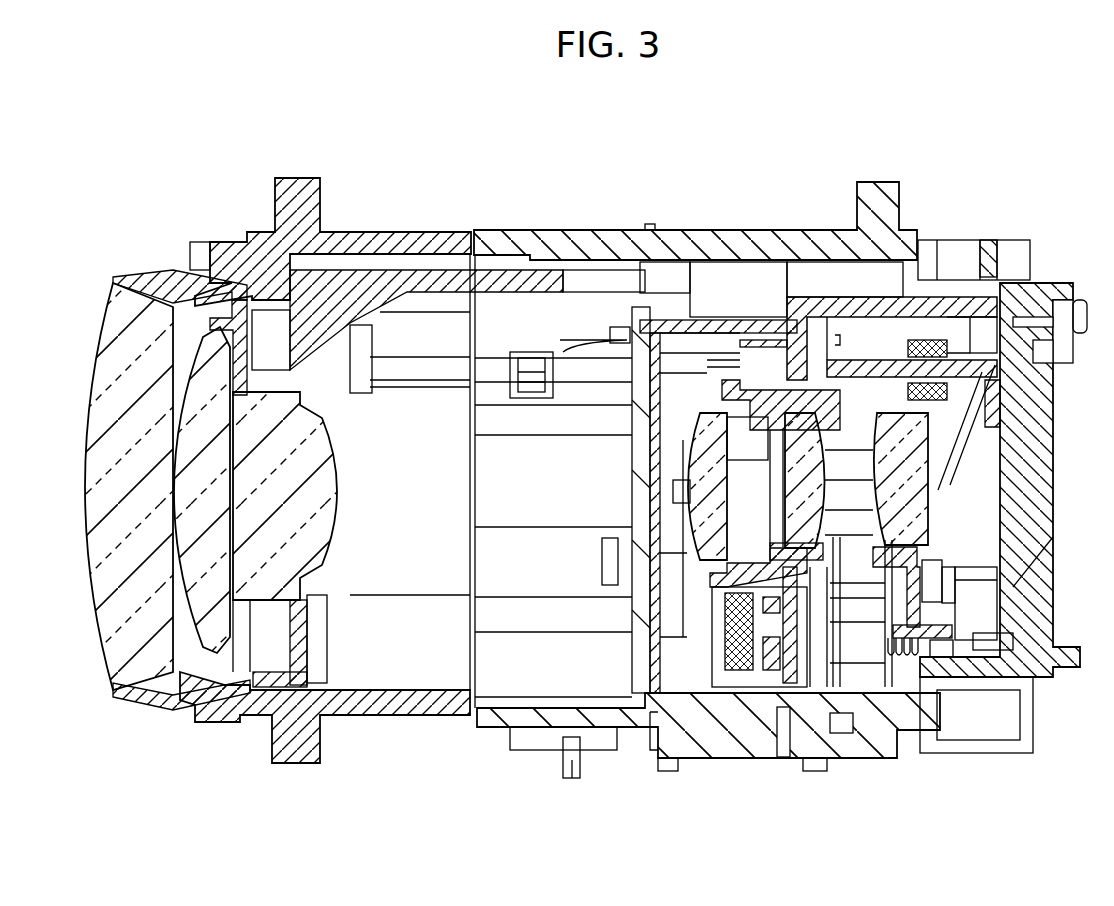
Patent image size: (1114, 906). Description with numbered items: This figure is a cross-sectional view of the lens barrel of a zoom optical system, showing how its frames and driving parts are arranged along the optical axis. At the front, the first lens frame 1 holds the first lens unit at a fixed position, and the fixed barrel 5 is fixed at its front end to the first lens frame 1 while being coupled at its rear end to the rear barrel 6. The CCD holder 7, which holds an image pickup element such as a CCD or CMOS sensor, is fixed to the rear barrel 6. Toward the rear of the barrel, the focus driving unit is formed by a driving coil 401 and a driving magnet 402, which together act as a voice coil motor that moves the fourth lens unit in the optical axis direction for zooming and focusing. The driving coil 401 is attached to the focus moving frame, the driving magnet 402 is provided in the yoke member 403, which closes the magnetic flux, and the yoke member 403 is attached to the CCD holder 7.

The first lens frame 1 is at (150, 275).
The fixed barrel 5 is at (382, 230).
The rear barrel 6 is at (688, 230).
The CCD holder 7 is at (1045, 283).
The driving coil 401 is at (910, 325).
The driving magnet 402 is at (912, 325).
The yoke member 403 is at (943, 300).